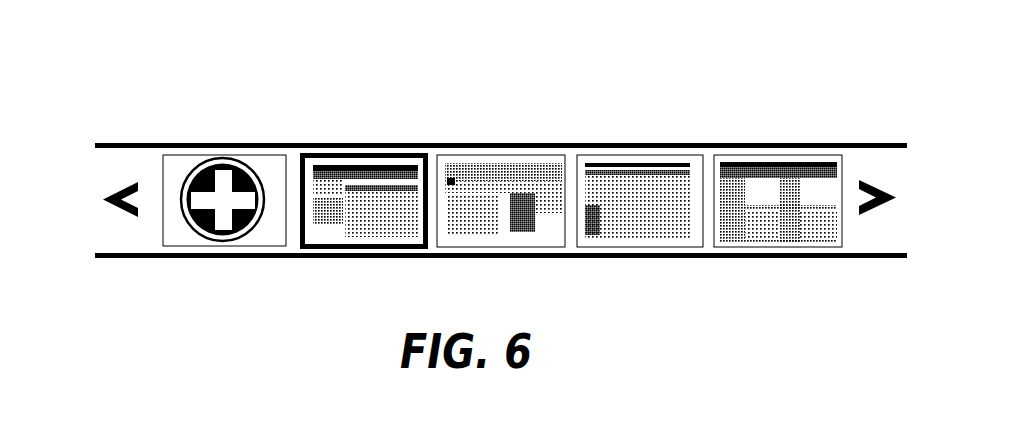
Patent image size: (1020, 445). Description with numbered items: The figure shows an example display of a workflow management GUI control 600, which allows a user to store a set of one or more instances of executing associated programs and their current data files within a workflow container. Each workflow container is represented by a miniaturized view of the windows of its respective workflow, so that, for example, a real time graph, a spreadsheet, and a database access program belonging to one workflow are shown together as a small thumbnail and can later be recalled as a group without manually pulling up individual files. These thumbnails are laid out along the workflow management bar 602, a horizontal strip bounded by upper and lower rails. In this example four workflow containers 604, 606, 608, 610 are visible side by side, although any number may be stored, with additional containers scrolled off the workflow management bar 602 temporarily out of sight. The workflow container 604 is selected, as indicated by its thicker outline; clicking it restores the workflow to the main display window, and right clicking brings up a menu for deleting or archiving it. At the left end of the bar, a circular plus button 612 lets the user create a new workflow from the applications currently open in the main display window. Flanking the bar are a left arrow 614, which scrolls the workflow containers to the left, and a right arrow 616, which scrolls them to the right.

The workflow management GUI control 600 is at (208, 61).
The workflow management bar 602 is at (318, 258).
The workflow container 604 is at (372, 147).
The workflow container 606 is at (497, 150).
The workflow container 608 is at (640, 152).
The workflow container 610 is at (787, 152).
The plus button 612 is at (205, 154).
The left arrow 614 is at (112, 215).
The right arrow 616 is at (885, 210).